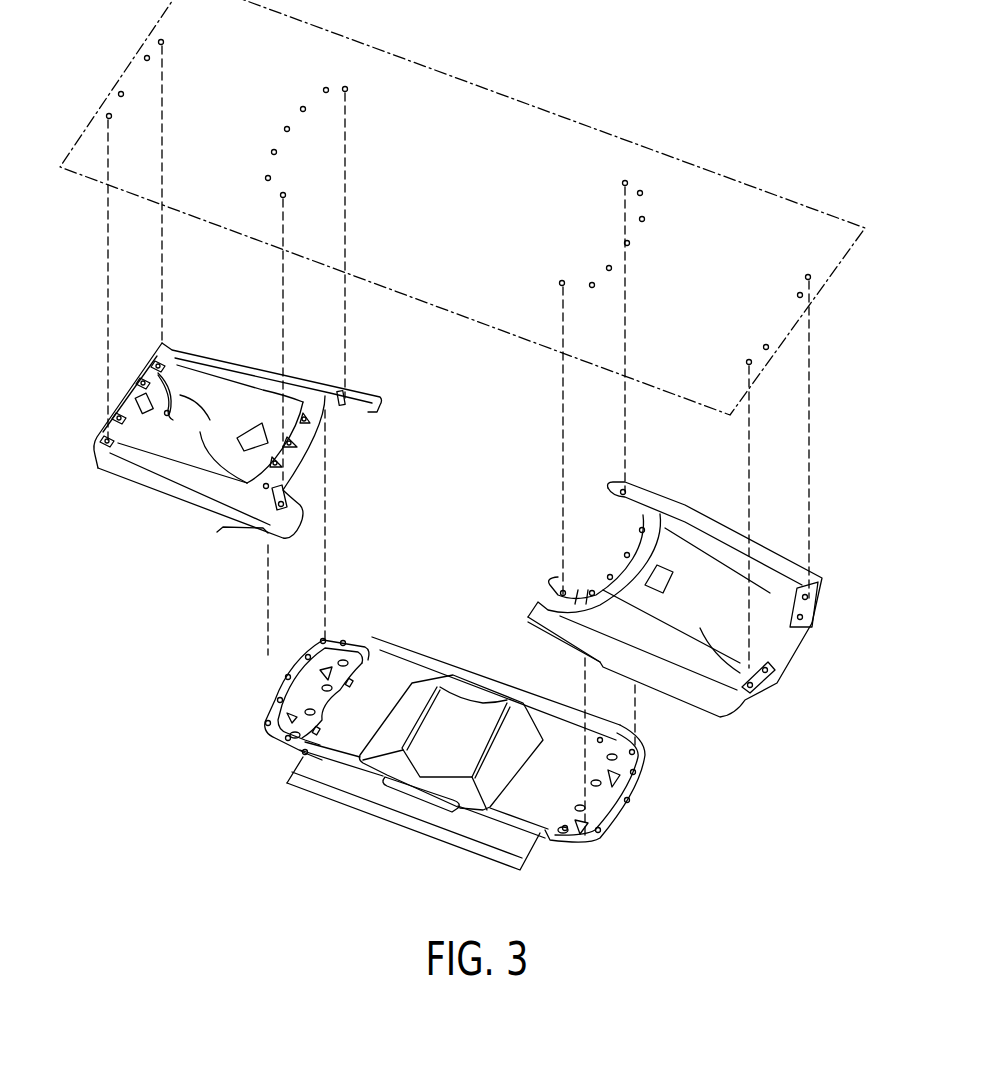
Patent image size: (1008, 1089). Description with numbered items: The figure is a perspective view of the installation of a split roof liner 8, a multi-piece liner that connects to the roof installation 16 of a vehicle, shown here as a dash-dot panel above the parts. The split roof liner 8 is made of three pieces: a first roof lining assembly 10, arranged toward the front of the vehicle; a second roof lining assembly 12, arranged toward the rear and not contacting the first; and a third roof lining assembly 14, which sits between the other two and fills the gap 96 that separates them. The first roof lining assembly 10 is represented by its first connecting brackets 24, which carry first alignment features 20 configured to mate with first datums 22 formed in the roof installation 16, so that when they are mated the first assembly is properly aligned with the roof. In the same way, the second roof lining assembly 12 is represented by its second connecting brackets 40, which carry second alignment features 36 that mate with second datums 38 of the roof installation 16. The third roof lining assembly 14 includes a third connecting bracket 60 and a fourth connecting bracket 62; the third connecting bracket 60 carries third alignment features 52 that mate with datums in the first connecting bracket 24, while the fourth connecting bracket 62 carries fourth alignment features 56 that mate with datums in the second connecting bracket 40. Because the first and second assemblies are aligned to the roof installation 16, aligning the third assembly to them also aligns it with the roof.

The split roof liner 8 is at (793, 732).
The first roof lining assembly 10 is at (768, 593).
The second roof lining assembly 12 is at (153, 494).
The third roof lining assembly 14 is at (463, 736).
The roof installation 16 is at (533, 120).
The first alignment features 20 is at (618, 578).
The first datums 22 is at (625, 183).
The first connecting brackets 24 is at (800, 603).
The second alignment features 36 is at (270, 418).
The second datums 38 is at (121, 94).
The second connecting brackets 40 is at (163, 373).
The third alignment features 52 is at (615, 807).
The fourth alignment features 56 is at (285, 683).
The third connecting bracket 60 is at (637, 787).
The fourth connecting bracket 62 is at (318, 640).
The gap 96 is at (308, 517).